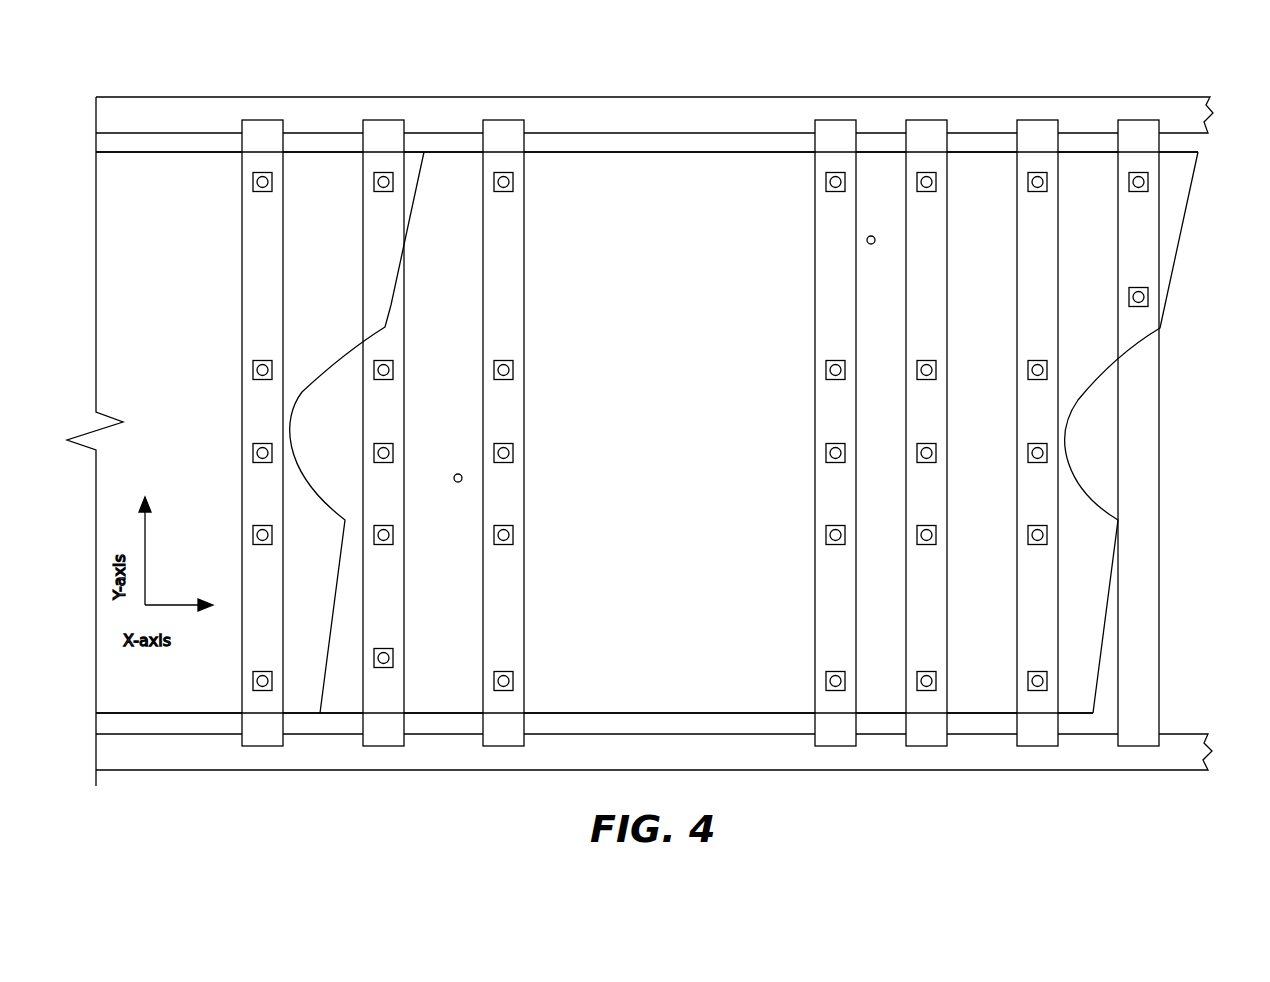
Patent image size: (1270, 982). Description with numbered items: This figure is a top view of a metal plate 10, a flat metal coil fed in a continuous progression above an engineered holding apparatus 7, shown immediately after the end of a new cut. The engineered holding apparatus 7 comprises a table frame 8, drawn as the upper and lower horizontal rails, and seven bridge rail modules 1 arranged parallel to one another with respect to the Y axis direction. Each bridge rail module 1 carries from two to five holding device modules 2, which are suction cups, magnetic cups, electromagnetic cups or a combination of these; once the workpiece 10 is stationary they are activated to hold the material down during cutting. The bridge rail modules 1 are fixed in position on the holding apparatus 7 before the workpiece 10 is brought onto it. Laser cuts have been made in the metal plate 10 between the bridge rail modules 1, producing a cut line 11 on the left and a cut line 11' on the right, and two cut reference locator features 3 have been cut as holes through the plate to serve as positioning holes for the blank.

The bridge rail module 1 is at (528, 688).
The holding device module 2 is at (377, 668).
The cut reference locator feature 3 is at (457, 486).
The engineered holding apparatus 7 is at (728, 78).
The table frame 8 is at (1108, 115).
The metal plate 10 is at (117, 441).
The cut line 11 is at (381, 432).
The cut line 11' is at (1158, 432).